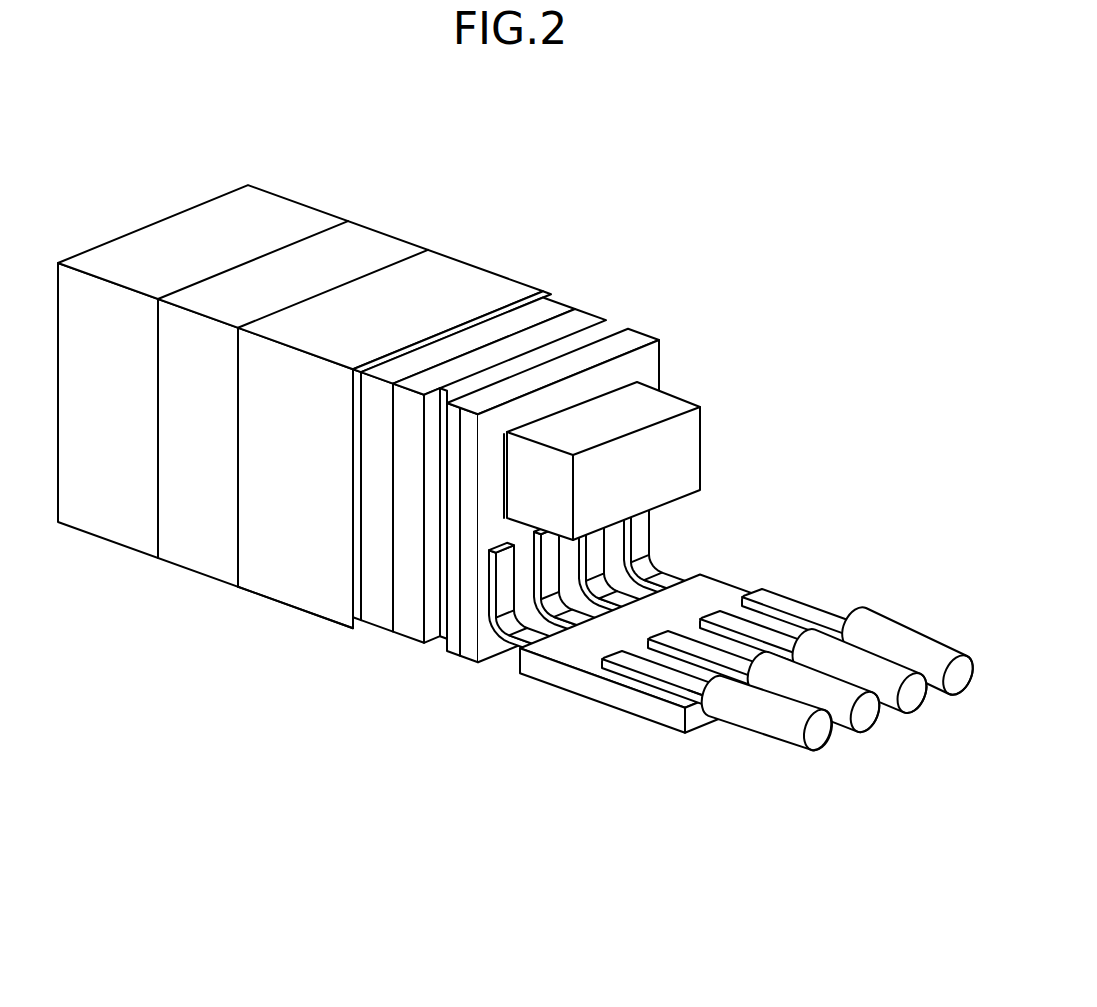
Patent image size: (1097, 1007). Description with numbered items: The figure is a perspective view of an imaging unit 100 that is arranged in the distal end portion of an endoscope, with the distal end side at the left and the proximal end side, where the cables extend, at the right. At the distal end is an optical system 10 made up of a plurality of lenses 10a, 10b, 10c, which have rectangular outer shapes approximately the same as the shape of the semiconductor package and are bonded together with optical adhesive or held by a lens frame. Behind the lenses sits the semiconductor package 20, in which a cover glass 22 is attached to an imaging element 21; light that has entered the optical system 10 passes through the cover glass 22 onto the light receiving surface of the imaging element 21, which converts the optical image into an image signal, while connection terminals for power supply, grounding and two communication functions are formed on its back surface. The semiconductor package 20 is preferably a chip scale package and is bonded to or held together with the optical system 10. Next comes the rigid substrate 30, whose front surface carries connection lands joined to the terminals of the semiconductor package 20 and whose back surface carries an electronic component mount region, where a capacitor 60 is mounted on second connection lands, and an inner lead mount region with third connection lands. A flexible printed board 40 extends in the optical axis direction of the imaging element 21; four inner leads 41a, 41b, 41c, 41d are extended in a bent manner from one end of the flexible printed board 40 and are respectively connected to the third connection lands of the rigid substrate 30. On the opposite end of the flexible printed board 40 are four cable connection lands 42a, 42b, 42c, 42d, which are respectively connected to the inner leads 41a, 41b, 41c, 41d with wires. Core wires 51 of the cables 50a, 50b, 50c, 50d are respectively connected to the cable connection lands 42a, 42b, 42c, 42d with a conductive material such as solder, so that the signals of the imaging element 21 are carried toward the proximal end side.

The imaging unit 100 is at (540, 145).
The optical system 10 is at (300, 407).
The lens 10a is at (102, 527).
The lens 10b is at (197, 558).
The lens 10c is at (290, 592).
The semiconductor package 20 is at (492, 475).
The imaging element 21 is at (410, 629).
The cover glass 22 is at (366, 618).
The rigid substrate 30 is at (652, 328).
The flexible printed board 40 is at (607, 715).
The inner lead 41a is at (505, 598).
The inner lead 41b is at (650, 553).
The inner lead 41c is at (553, 583).
The inner lead 41d is at (603, 548).
The cable connection land 42a is at (600, 670).
The cable connection land 42b is at (768, 612).
The cable connection land 42c is at (662, 648).
The cable connection land 42d is at (770, 606).
The cable 50a is at (783, 730).
The cable 50b is at (937, 675).
The cable 50c is at (842, 718).
The cable 50d is at (888, 700).
The core wire 51 is at (693, 687).
The capacitor 60 is at (673, 403).